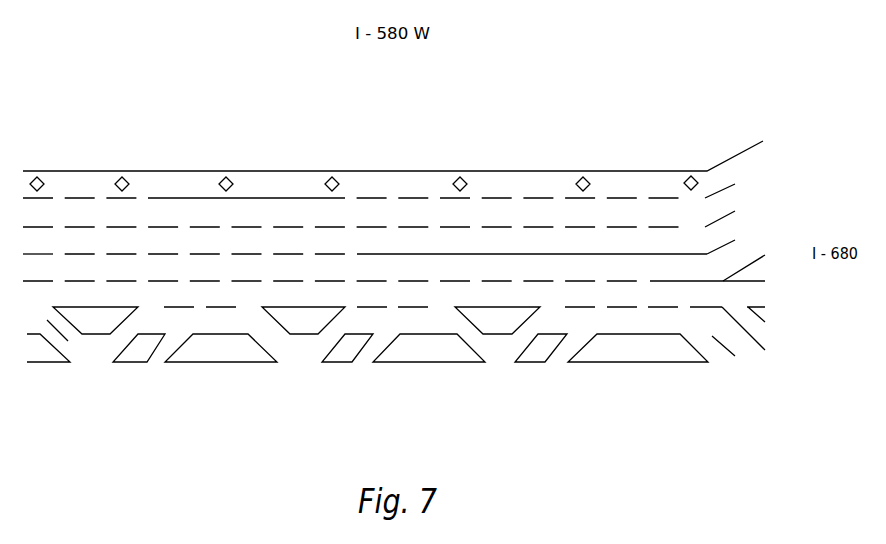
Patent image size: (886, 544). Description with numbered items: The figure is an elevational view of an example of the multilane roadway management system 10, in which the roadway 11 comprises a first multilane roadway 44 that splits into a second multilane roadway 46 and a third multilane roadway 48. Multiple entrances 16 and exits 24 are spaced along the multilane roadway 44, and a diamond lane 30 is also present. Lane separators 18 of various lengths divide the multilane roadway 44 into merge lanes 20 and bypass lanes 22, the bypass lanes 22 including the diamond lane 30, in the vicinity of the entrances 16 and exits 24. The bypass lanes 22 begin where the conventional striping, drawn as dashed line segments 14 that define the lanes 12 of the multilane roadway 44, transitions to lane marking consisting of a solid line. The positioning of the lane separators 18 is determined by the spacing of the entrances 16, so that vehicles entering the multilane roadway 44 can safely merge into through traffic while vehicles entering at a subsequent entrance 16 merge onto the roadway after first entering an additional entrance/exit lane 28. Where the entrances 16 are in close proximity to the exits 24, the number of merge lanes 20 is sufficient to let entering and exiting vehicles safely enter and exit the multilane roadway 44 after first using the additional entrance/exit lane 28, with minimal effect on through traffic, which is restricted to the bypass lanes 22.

The multilane roadway management system 10 is at (392, 132).
The roadway 11 is at (143, 170).
The lanes 12 is at (90, 250).
The dashed line segments 14 is at (250, 227).
The entrances 16 is at (157, 354).
The lane separators 18 is at (200, 198).
The merge lanes 20 is at (394, 297).
The bypass lanes 22 is at (351, 230).
The exits 24 is at (310, 355).
The additional entrance/exit lane 28 is at (381, 364).
The diamond lane 30 is at (351, 188).
The first multilane roadway 44 is at (38, 248).
The second multilane roadway 46 is at (733, 219).
The third multilane roadway 48 is at (743, 302).